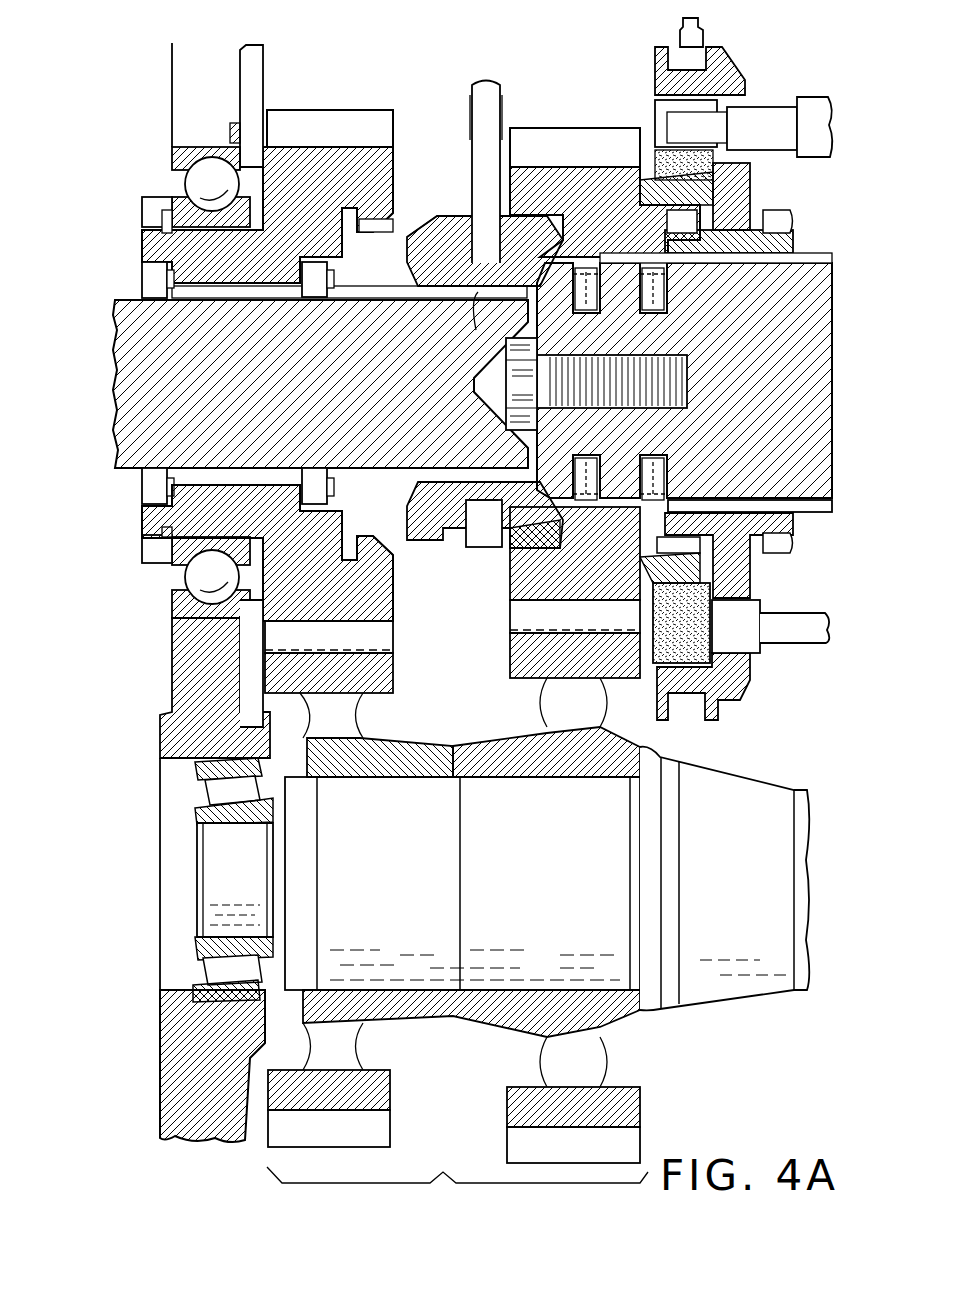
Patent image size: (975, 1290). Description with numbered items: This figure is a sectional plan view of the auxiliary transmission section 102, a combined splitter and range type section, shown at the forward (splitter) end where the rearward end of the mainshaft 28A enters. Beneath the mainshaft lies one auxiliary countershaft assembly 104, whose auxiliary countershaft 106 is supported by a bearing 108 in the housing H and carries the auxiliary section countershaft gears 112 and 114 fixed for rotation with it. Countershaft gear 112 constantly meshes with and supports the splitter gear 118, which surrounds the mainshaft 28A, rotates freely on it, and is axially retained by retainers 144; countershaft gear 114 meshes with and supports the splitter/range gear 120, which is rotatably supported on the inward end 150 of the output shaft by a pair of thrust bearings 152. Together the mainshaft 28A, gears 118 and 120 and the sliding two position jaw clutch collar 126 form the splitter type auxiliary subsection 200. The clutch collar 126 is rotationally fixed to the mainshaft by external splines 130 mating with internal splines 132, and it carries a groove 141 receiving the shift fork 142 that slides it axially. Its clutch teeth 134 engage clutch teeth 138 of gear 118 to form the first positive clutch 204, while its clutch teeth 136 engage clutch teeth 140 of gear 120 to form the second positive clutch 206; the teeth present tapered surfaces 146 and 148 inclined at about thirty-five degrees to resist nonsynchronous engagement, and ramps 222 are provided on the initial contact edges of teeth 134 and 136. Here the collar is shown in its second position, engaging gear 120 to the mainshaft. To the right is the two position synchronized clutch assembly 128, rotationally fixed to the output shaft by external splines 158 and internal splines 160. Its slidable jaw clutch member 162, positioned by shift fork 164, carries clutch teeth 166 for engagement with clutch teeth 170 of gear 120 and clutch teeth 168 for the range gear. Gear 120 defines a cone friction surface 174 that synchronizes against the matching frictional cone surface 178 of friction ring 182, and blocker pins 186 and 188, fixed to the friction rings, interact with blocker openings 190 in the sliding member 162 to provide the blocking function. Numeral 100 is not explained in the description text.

The housing wall 100 is at (139, 78).
The auxiliary transmission section 102 is at (289, 92).
The first positive clutch 204 is at (408, 229).
The sliding two position jaw clutch collar 126 is at (441, 183).
The shift fork 142 is at (490, 116).
The shift fork 164 is at (672, 48).
The blocker openings 190 is at (738, 93).
The two position synchronized clutch assembly 128 is at (794, 73).
The blocker pin 186 is at (820, 118).
The retainers 144 is at (148, 276).
The clutch teeth 138 is at (383, 186).
The external splines 130 is at (380, 271).
The clutch teeth 140 is at (535, 213).
The cone friction surface 174 is at (662, 174).
The frictional cone surface 178 is at (684, 165).
The slidable jaw clutch member 162 is at (735, 192).
The clutch teeth 168 is at (778, 220).
The inward end of output shaft 150 is at (575, 277).
The clutch teeth 166 is at (688, 236).
The ramps 222 is at (406, 291).
The internal splines 132 is at (478, 296).
The thrust bearings 152 is at (588, 312).
The mainshaft 28A is at (320, 384).
The groove 141 is at (481, 499).
The tapered surface 146 is at (380, 530).
The internal splines 160 is at (738, 500).
The clutch teeth 134 is at (449, 537).
The clutch teeth 136 is at (515, 538).
The clutch teeth 170 is at (660, 546).
The external splines 158 is at (812, 510).
The auxiliary section splitter gear 118 is at (267, 621).
The tapered surface 148 is at (437, 534).
The auxiliary section splitter/range gear 120 is at (525, 575).
The second positive clutch 206 is at (575, 616).
The blocker pin 188 is at (740, 612).
The auxiliary section countershaft gear 112 is at (392, 666).
The auxiliary section countershaft gear 114 is at (515, 663).
The friction ring 182 is at (660, 673).
The bearing 108 is at (208, 788).
The housing H is at (175, 1020).
The auxiliary countershaft 106 is at (424, 998).
The auxiliary countershaft assembly 104 is at (790, 1006).
The splitter type auxiliary subsection 200 is at (457, 1126).